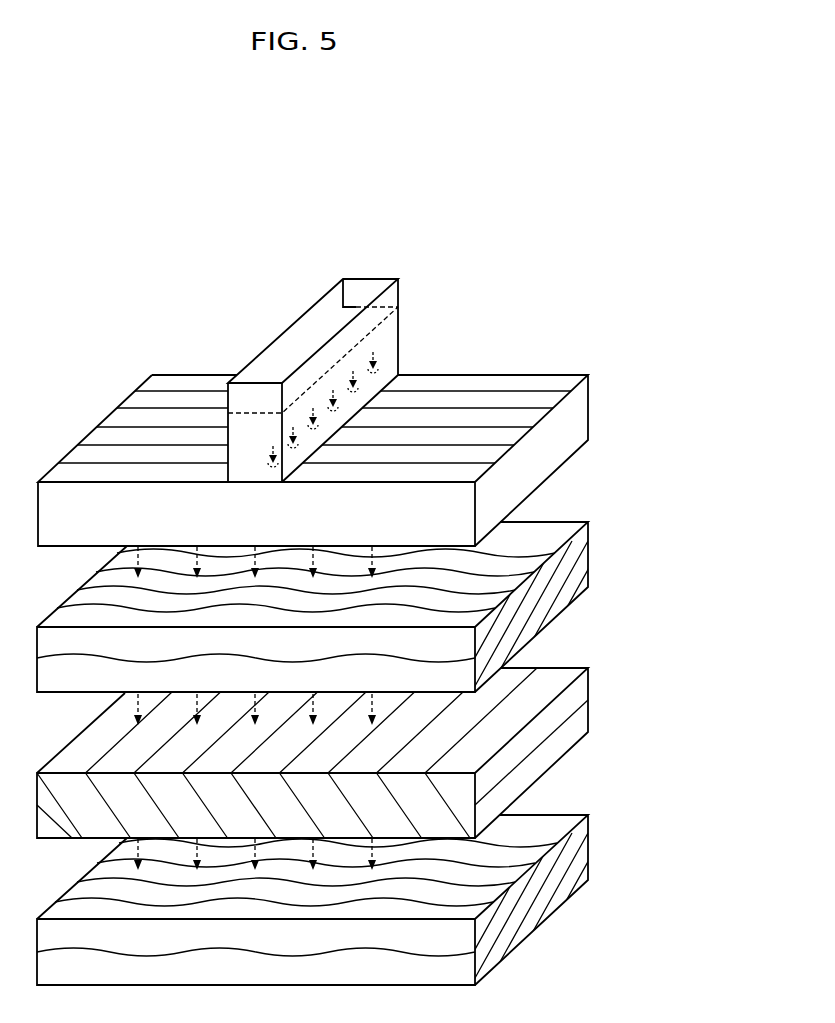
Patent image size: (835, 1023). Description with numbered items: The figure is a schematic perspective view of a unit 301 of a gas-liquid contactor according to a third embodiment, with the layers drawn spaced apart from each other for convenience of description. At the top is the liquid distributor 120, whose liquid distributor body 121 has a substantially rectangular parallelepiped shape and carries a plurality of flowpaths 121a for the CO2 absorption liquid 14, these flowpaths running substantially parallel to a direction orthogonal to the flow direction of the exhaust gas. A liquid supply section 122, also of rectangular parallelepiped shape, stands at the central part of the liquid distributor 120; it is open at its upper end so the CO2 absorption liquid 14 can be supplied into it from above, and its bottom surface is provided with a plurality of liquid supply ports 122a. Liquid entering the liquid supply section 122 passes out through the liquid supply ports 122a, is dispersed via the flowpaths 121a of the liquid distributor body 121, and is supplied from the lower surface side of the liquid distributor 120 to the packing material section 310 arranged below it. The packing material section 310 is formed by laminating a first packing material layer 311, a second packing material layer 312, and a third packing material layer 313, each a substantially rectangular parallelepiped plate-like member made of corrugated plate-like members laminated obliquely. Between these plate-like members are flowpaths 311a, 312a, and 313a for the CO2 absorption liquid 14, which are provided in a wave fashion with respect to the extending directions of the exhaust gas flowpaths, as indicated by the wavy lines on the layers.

The unit 301 is at (560, 238).
The liquid distributor 120 is at (374, 381).
The liquid distributor body 121 is at (588, 407).
The flowpaths 121a is at (173, 385).
The liquid supply section 122 is at (367, 278).
The liquid supply ports 122a is at (380, 360).
The CO2 absorption liquid 14 is at (333, 330).
The packing material section 310 is at (373, 752).
The first packing material layer 311 is at (588, 840).
The flowpaths 311a is at (540, 830).
The second packing material layer 312 is at (588, 697).
The flowpaths 312a is at (552, 678).
The third packing material layer 313 is at (588, 551).
The flowpaths 313a is at (540, 530).